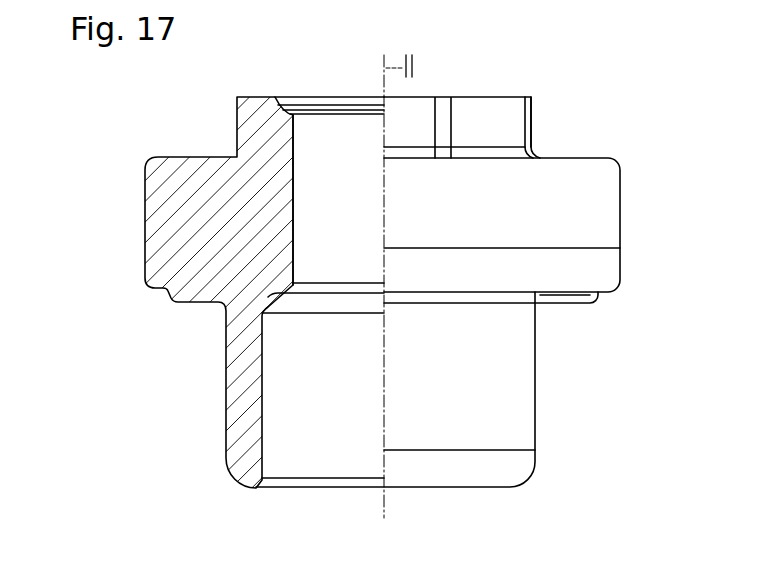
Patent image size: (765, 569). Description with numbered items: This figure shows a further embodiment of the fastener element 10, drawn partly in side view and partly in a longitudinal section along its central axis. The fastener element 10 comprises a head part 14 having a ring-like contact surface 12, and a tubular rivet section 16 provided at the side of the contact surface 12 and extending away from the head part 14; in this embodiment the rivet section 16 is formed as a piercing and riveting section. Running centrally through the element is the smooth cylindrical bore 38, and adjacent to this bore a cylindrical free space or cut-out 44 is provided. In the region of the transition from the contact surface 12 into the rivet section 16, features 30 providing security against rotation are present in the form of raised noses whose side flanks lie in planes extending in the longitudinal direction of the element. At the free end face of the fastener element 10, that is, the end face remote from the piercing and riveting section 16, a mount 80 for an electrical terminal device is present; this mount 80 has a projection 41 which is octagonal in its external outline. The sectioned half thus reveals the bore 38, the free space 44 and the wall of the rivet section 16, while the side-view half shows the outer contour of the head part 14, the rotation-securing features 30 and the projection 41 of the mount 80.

The fastener element 10 is at (136, 209).
The ring-like contact surface 12 is at (472, 270).
The head part 14 is at (622, 227).
The rivet section 16 is at (538, 420).
The features providing security against rotation 30 is at (573, 305).
The smooth cylindrical bore 38 is at (296, 187).
The projection 41 is at (533, 128).
The cylindrical free space 44 is at (302, 96).
The mount for an electrical terminal device 80 is at (492, 89).